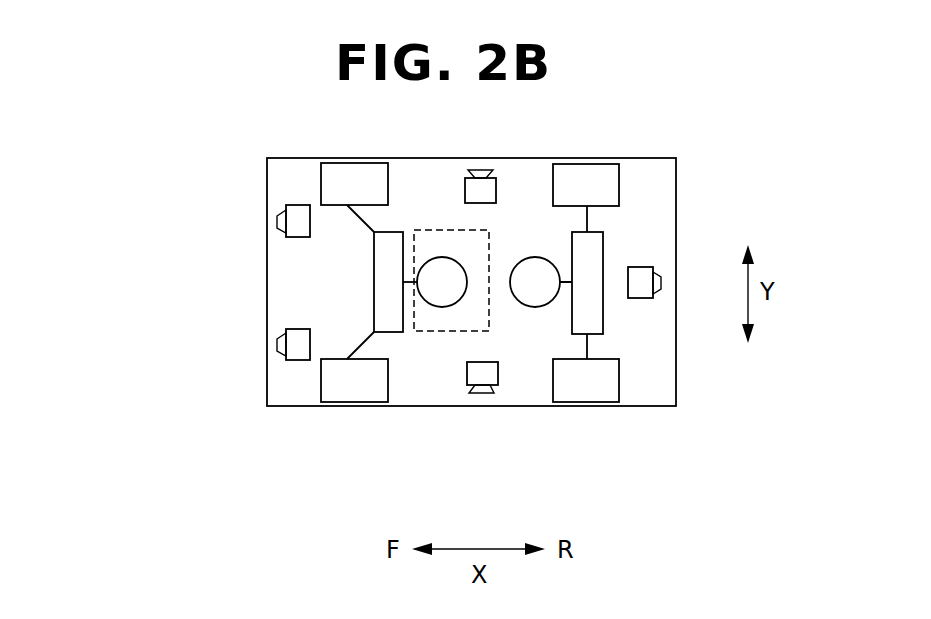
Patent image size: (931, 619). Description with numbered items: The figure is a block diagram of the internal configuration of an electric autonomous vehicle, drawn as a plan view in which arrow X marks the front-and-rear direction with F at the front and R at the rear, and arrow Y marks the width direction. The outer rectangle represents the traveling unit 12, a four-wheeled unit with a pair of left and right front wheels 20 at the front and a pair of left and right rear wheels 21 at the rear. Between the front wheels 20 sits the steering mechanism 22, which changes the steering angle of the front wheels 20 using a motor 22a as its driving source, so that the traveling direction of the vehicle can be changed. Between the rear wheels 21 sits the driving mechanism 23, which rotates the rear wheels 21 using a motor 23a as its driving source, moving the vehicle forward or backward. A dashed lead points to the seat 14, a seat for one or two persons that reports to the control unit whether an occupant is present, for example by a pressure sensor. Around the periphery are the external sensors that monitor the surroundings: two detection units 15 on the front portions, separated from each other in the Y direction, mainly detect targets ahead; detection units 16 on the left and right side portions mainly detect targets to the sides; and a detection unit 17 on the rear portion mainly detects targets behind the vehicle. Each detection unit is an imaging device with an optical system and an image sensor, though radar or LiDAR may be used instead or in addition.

The traveling unit 12 is at (636, 150).
The seat 14 is at (462, 331).
The detection units 15 is at (277, 222).
The detection units 16 is at (479, 169).
The detection unit 17 is at (661, 283).
The front wheels 20 is at (372, 159).
The rear wheels 21 is at (592, 163).
The steering mechanism 22 is at (409, 223).
The motor 22a is at (442, 308).
The driving mechanism 23 is at (560, 236).
The motor 23a is at (535, 307).